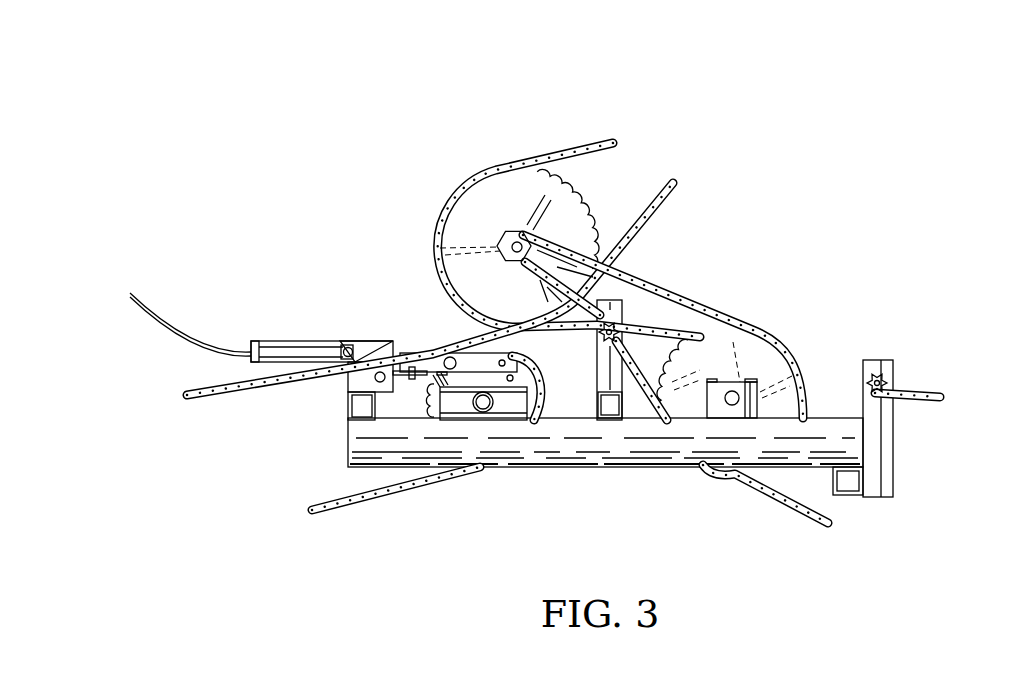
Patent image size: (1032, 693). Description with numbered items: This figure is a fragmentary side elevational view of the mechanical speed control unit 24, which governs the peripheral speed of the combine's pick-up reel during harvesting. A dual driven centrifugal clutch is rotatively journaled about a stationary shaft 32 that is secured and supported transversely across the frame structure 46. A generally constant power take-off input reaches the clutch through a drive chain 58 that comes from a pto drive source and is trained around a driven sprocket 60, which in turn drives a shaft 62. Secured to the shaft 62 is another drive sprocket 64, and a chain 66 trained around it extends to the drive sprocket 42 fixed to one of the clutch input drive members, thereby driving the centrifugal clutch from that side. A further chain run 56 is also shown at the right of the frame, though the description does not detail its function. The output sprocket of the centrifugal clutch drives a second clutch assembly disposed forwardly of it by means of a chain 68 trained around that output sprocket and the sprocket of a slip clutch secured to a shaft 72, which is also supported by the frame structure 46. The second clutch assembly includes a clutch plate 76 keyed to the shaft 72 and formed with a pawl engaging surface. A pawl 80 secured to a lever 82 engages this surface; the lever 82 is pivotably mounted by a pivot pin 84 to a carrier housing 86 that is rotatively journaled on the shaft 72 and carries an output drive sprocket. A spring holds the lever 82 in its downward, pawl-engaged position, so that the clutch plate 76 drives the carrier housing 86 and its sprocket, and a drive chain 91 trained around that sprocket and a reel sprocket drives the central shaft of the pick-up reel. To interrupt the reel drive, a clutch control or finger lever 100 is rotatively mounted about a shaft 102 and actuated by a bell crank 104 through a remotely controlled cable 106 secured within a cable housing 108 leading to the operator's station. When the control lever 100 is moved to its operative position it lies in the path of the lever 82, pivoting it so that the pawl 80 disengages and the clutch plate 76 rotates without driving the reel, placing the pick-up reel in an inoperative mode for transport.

The speed control unit 24 is at (572, 78).
The stationary shaft 32 is at (733, 400).
The drive sprocket 42 is at (742, 343).
The frame structure 46 is at (650, 466).
The conveyor chain 56 is at (917, 393).
The drive chain 58 is at (600, 143).
The driven sprocket 60 is at (468, 198).
The shaft 62 is at (500, 250).
The drive sprocket 64 is at (465, 236).
The chain 66 is at (650, 285).
The chain 68 is at (683, 306).
The shaft 72 is at (482, 415).
The clutch plate 76 is at (512, 405).
The pawl 80 is at (446, 360).
The lever 82 is at (446, 357).
The pivot pin 84 is at (530, 356).
The carrier housing 86 is at (542, 392).
The drive chain 91 is at (368, 498).
The control lever 100 is at (348, 450).
The shaft 102 is at (378, 382).
The bell crank 104 is at (352, 345).
The cable 106 is at (313, 342).
The cable housing 108 is at (195, 340).